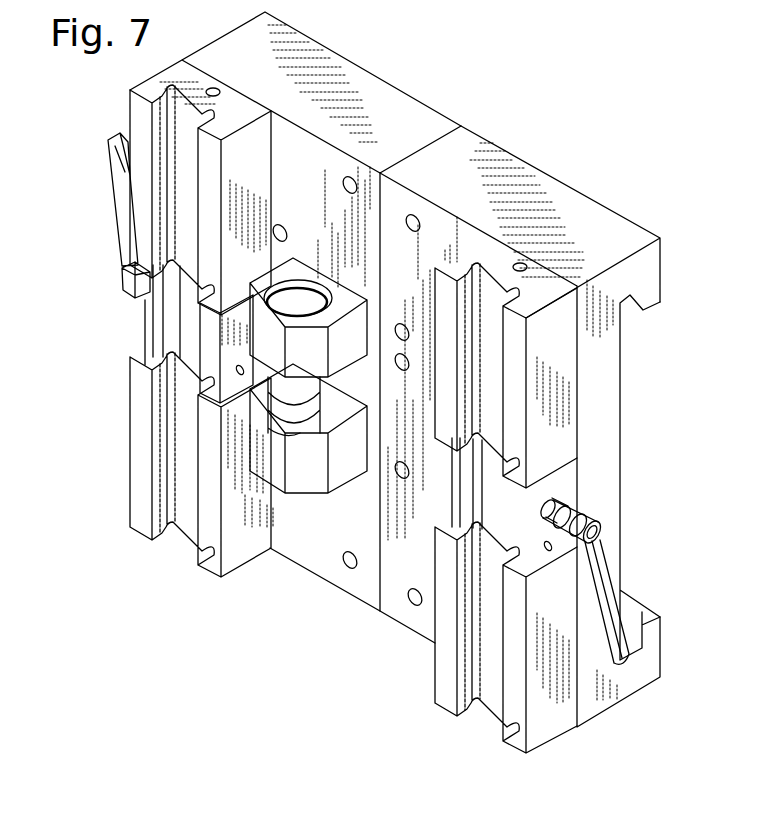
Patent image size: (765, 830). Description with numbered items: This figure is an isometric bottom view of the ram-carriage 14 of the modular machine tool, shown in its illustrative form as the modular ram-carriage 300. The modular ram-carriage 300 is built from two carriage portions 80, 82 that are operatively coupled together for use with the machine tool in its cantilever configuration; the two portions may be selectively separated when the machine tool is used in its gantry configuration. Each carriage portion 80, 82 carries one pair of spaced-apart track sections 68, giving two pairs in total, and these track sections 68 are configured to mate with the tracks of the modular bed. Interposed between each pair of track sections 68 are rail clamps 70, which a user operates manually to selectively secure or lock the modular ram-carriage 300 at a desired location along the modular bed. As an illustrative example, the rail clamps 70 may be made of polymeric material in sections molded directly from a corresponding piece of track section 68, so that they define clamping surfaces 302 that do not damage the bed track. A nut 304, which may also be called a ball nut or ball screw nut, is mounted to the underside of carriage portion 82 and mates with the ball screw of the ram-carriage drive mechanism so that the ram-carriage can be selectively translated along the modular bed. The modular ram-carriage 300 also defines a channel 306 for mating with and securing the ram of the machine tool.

The ram-carriage 14 is at (657, 81).
The modular ram-carriage 300 is at (567, 104).
The carriage portion 82 is at (357, 61).
The carriage portion 80 is at (522, 151).
The track section 68 is at (263, 174).
The rail clamp 70 is at (134, 334).
The clamping surface 302 is at (172, 314).
The nut 304 is at (338, 458).
The channel 306 is at (624, 308).